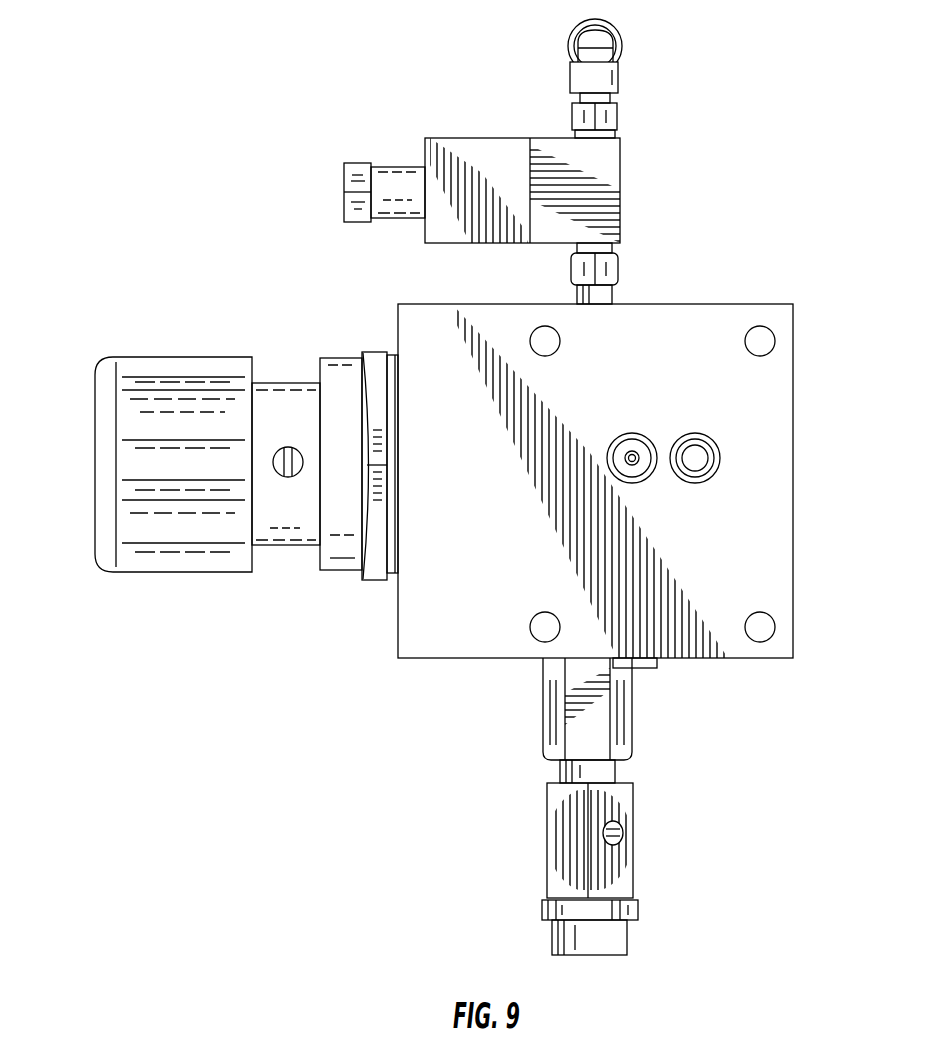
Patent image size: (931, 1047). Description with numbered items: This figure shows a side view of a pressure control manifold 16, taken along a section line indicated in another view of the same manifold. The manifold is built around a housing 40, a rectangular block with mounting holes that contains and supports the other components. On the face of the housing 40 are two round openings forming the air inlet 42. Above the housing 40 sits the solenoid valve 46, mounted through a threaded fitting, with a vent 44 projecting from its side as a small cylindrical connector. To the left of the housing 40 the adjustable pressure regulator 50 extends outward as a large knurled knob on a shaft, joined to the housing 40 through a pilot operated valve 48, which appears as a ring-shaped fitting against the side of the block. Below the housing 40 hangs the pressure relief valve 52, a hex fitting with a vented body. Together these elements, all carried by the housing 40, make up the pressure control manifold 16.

The pressure control manifold 16 is at (196, 86).
The housing 40 is at (794, 570).
The air inlet 42 is at (720, 463).
The vent 44 is at (344, 185).
The solenoid valve 46 is at (621, 187).
The pilot operated valve 48 is at (380, 580).
The adjustable pressure regulator 50 is at (100, 573).
The pressure relief valve 52 is at (635, 840).